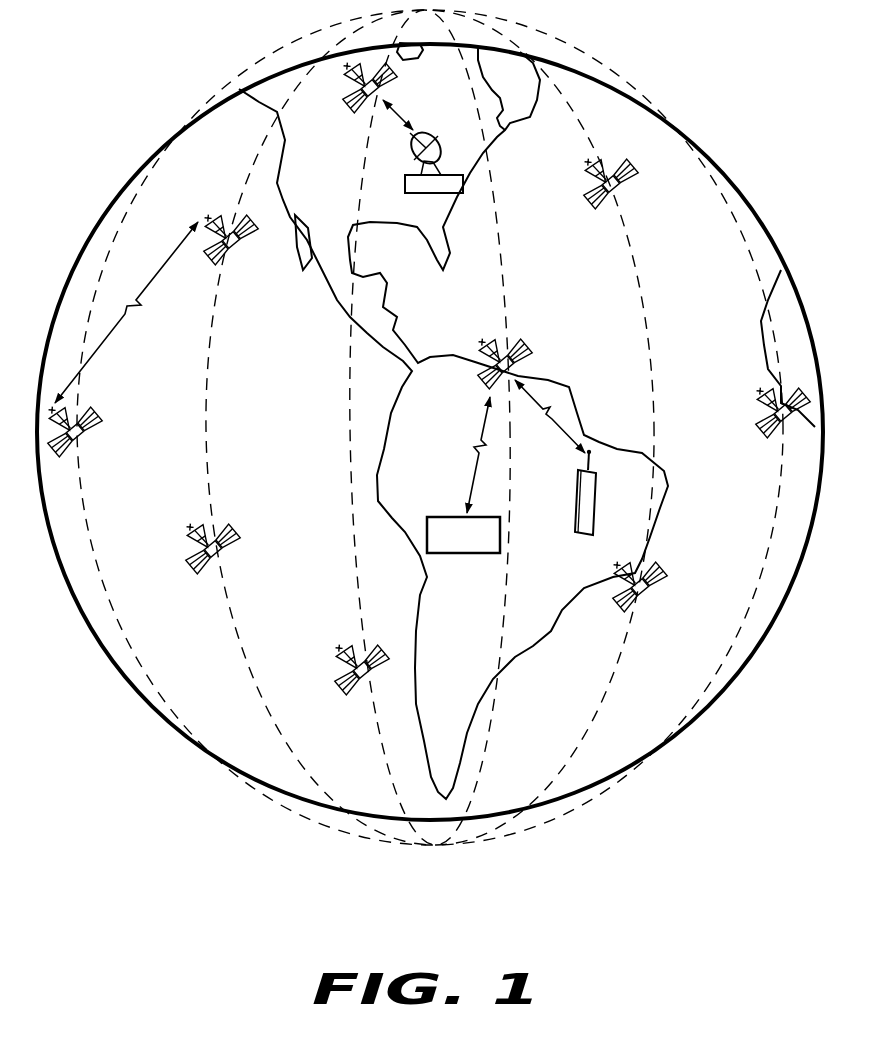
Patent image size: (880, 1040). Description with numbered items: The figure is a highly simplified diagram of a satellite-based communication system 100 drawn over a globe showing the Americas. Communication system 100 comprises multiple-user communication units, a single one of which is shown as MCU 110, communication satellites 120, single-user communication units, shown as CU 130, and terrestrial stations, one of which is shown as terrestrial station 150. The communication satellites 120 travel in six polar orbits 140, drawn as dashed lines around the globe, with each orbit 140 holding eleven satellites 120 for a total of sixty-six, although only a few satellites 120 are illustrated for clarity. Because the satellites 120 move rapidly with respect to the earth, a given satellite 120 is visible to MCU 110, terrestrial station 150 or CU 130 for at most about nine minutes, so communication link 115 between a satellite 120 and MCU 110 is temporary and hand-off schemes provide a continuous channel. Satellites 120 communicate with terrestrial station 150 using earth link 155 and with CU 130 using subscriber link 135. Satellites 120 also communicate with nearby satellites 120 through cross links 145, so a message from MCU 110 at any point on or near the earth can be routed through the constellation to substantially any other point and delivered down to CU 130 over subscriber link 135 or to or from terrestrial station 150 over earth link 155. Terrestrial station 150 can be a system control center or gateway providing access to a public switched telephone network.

The communication system 100 is at (257, 936).
The multiple-user communication unit 110 is at (467, 553).
The communication link 115 is at (480, 473).
The communication satellite 120 is at (352, 107).
The single-user communication unit 130 is at (580, 534).
The subscriber link 135 is at (552, 421).
The polar orbit 140 is at (246, 184).
The cross link 145 is at (131, 302).
The terrestrial station 150 is at (457, 194).
The earth link 155 is at (398, 114).